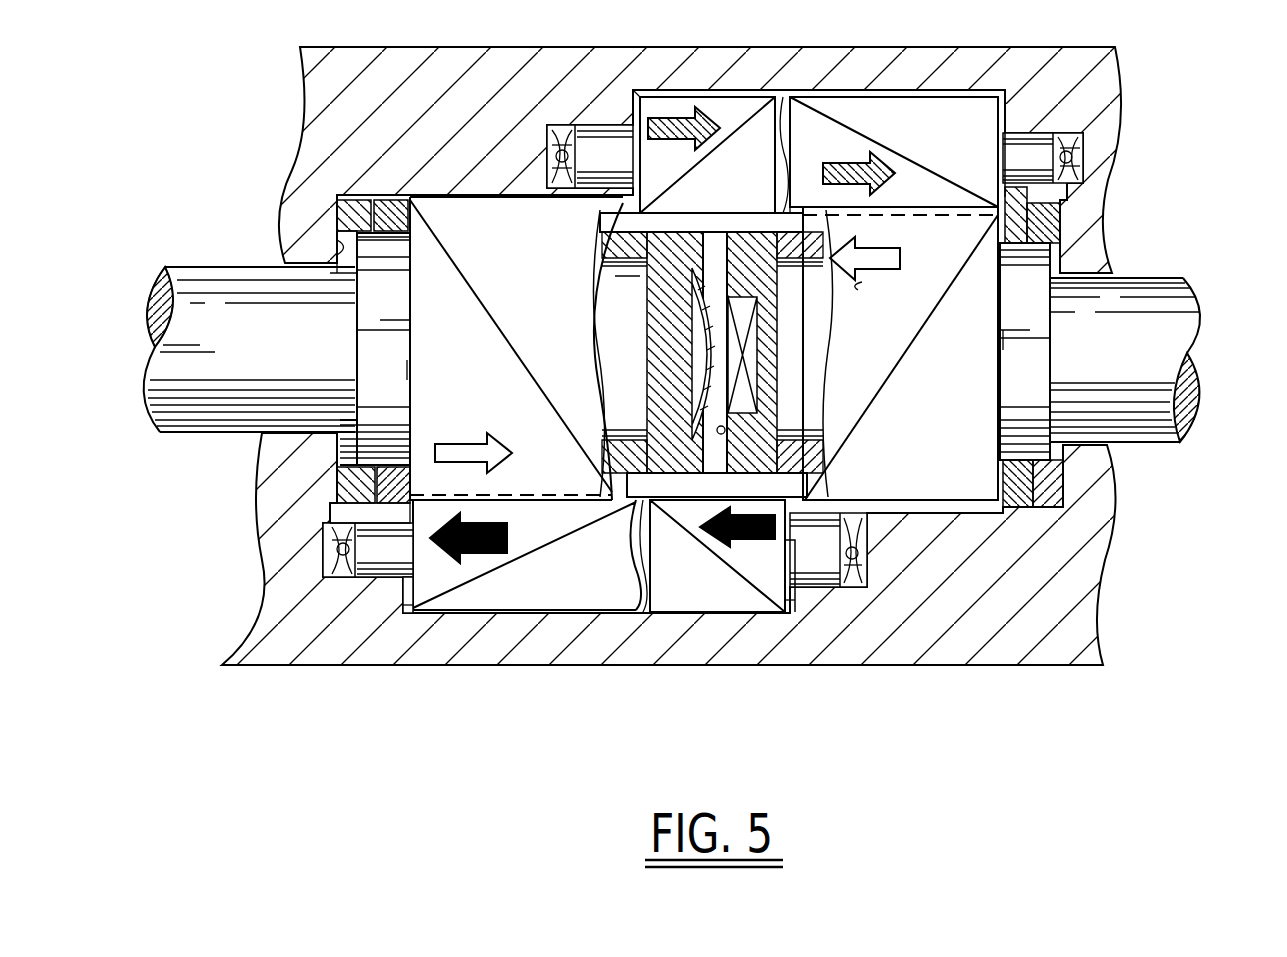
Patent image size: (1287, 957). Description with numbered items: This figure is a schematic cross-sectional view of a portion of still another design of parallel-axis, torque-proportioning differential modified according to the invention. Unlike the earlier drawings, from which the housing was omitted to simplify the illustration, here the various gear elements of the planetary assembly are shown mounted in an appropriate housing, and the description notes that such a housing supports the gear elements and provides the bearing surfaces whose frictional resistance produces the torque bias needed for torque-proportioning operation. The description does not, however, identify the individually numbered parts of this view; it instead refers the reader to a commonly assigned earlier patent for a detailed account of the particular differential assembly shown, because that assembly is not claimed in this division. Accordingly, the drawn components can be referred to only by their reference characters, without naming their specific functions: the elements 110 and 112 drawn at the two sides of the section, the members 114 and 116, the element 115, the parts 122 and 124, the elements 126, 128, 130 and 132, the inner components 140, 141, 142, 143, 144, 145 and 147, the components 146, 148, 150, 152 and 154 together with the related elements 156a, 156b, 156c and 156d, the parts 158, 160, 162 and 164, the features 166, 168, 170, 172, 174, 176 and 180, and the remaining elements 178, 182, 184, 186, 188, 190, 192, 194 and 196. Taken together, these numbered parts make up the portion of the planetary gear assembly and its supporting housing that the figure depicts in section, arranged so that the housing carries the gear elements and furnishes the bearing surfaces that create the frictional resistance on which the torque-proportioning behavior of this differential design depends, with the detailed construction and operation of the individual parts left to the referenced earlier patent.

The input shaft 110 is at (150, 305).
The output shaft 112 is at (1190, 332).
The first clutch member 114 is at (474, 350).
The housing 115 is at (448, 97).
The second clutch member 116 is at (955, 414).
The retaining ring 122 is at (400, 590).
The retaining ring 124 is at (1008, 120).
The first magnet block 126 is at (530, 600).
The second magnet block 128 is at (885, 110).
The third magnet block 130 is at (715, 600).
The fourth magnet block 132 is at (658, 100).
The coil 140 is at (750, 358).
The coil housing 141 is at (768, 315).
The spring 142 is at (690, 355).
The spring retainer 143 is at (642, 318).
The spacer 144 is at (805, 575).
The pin 145 is at (730, 430).
The bearing 146 is at (578, 128).
The hub 147 is at (707, 245).
The bearing 148 is at (345, 562).
The bearing 150 is at (862, 540).
The bearing race 152 is at (553, 148).
The bearing race 154 is at (1090, 165).
The bearing ball 156a is at (328, 548).
The bearing ball 156b is at (860, 557).
The bearing ball 156c is at (550, 157).
The bearing ball 156d is at (1082, 172).
The spacer 158 is at (400, 605).
The spacer 160 is at (775, 600).
The spacer 162 is at (640, 103).
The spacer 164 is at (985, 105).
The magnetization direction arrow 166 is at (448, 440).
The magnetization direction arrow 168 is at (498, 533).
The magnetization direction arrow 170 is at (730, 543).
The magnetization direction arrow 172 is at (680, 115).
The magnetization direction arrow 174 is at (840, 165).
The magnetization direction arrow 176 is at (862, 282).
The seal 178 is at (395, 200).
The magnetization direction arrow 180 is at (990, 228).
The spline 182 is at (407, 367).
The spline 184 is at (1003, 340).
The seal 186 is at (345, 490).
The housing wall 188 is at (1070, 500).
The snap ring 190 is at (345, 258).
The snap ring 192 is at (1048, 462).
The seal 194 is at (345, 240).
The seal 196 is at (1055, 485).